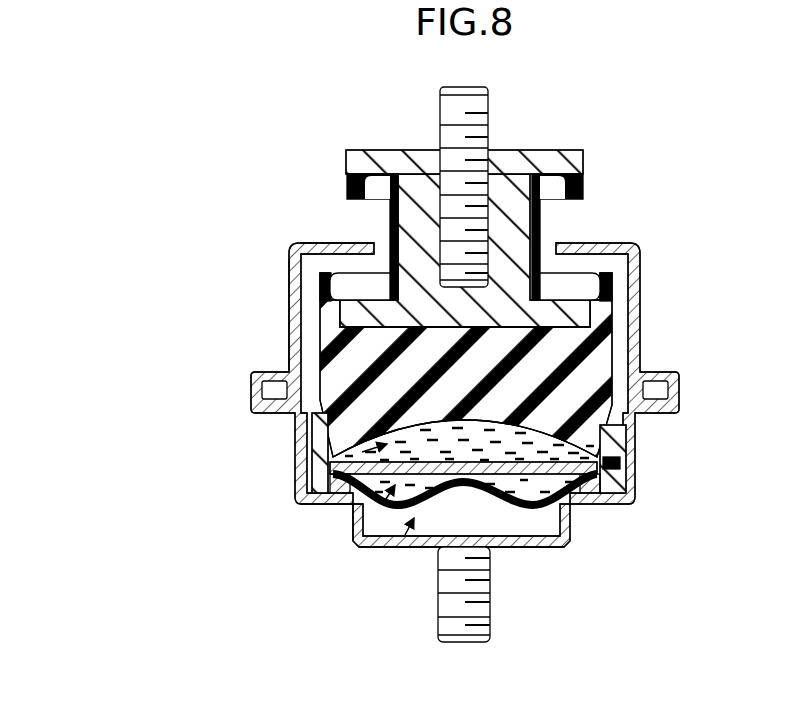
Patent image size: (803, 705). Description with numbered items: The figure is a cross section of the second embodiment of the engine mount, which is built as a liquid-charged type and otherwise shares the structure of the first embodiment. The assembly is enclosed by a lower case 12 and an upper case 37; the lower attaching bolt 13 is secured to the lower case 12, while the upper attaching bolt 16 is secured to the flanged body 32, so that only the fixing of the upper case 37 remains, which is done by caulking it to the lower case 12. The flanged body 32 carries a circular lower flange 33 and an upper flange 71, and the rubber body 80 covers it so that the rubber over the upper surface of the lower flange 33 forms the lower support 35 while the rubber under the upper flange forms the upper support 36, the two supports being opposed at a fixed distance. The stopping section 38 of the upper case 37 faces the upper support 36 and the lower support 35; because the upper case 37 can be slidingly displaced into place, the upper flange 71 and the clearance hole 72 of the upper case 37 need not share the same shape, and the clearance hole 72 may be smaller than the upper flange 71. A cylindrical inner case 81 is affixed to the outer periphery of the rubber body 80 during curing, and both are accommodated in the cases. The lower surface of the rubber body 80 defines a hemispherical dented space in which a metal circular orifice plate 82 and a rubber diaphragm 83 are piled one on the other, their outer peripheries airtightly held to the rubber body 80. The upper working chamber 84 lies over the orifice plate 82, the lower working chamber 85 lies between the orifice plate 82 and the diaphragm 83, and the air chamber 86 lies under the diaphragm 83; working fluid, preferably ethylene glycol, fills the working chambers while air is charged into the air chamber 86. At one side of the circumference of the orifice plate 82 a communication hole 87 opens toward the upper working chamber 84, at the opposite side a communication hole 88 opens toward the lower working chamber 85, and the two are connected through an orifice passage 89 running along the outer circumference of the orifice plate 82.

The lower case 12 is at (513, 543).
The lower attaching bolt 13 is at (485, 608).
The upper attaching bolt 16 is at (492, 95).
The flanged body 32 is at (520, 216).
The lower flange 33 is at (588, 306).
The lower support 35 is at (288, 272).
The upper support 36 is at (362, 201).
The upper case 37 is at (289, 337).
The stopping section 38 is at (372, 243).
The upper flange 71 is at (583, 153).
The clearance hole 72 is at (378, 238).
The rubber body 80 is at (592, 367).
The inner case 81 is at (633, 433).
The orifice plate 82 is at (575, 515).
The diaphragm 83 is at (522, 535).
The upper working chamber 84 is at (294, 432).
The lower working chamber 85 is at (355, 507).
The air chamber 86 is at (383, 553).
The communication hole 87 is at (635, 458).
The communication hole 88 is at (316, 507).
The orifice passage 89 is at (627, 485).